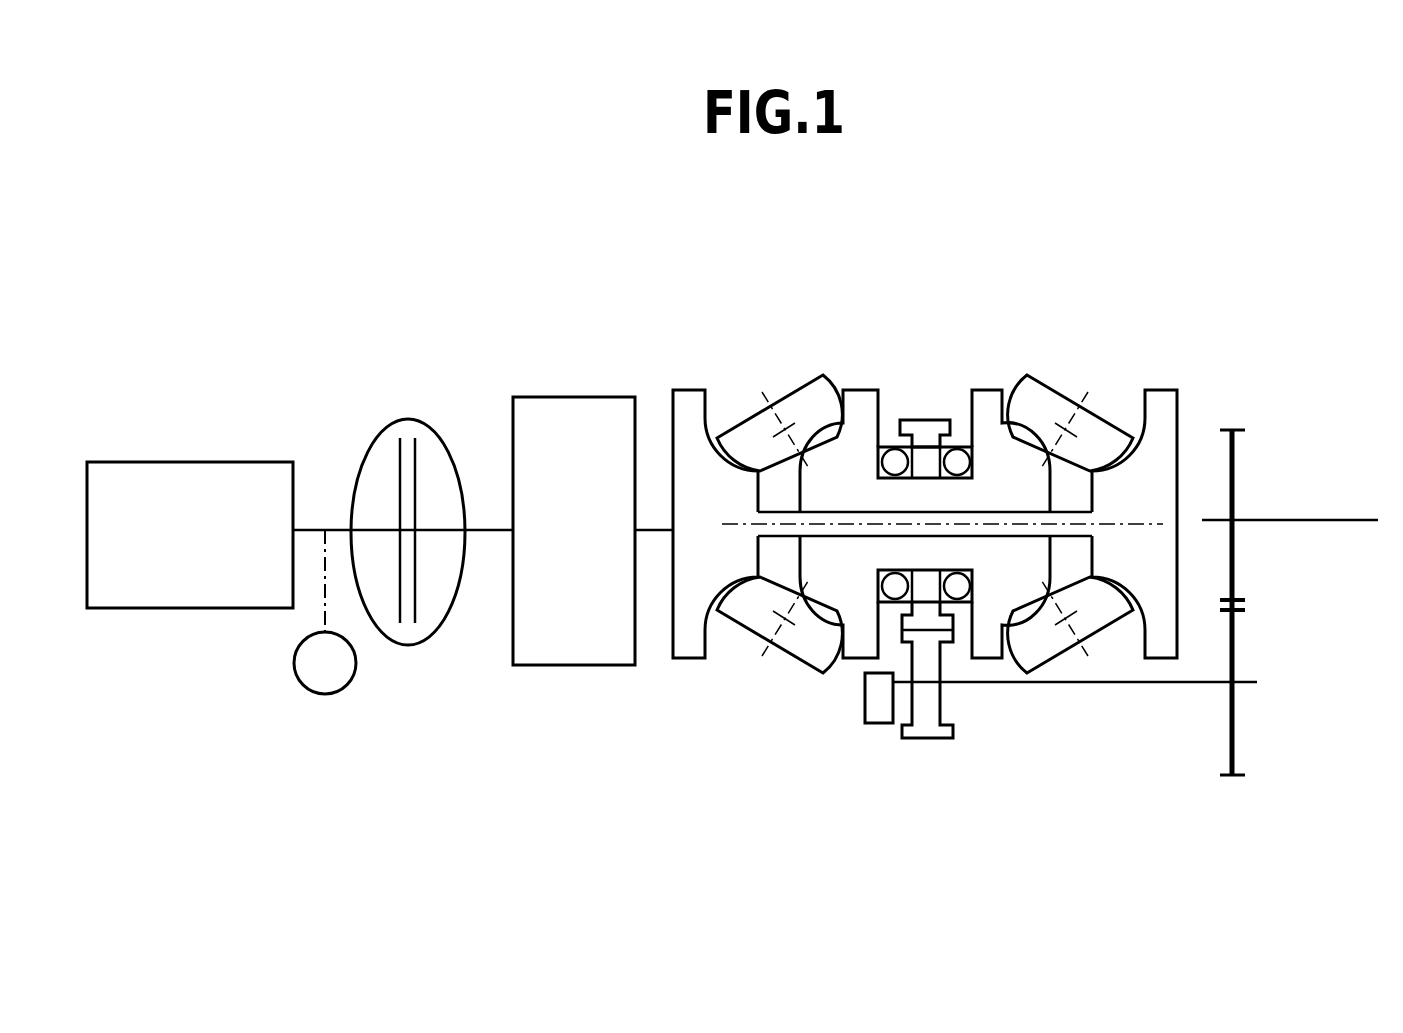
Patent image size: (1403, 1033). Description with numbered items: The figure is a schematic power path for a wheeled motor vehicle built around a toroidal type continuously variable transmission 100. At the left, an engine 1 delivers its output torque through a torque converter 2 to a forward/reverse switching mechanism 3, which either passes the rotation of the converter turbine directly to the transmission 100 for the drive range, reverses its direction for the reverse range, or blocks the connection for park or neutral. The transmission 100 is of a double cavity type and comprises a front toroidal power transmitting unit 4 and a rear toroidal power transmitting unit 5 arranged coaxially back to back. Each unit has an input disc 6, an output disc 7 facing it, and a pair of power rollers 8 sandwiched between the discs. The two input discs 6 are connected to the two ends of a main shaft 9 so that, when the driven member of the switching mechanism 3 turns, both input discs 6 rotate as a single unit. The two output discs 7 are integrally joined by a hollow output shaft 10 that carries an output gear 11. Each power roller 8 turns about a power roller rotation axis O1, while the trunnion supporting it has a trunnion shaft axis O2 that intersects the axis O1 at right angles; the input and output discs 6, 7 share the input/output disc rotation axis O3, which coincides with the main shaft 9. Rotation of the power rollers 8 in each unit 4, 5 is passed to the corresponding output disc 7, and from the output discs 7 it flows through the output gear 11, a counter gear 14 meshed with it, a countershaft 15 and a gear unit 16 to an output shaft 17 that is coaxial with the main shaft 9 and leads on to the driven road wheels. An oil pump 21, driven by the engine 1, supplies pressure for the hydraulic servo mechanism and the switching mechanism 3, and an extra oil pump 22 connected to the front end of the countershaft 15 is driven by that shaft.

The engine 1 is at (195, 462).
The torque converter 2 is at (410, 420).
The forward/reverse switching mechanism 3 is at (590, 666).
The front toroidal power transmitting unit 4 is at (773, 362).
The rear toroidal power transmitting unit 5 is at (1069, 355).
The input disc 6 is at (692, 402).
The output disc 7 is at (860, 402).
The power roller 8 is at (740, 440).
The main shaft 9 is at (778, 548).
The hollow output shaft 10 is at (955, 493).
The output gear 11 is at (912, 420).
The counter gear 14 is at (935, 740).
The countershaft 15 is at (1177, 683).
The gear unit 16 is at (1232, 562).
The output shaft 17 is at (1372, 521).
The oil pump 21 is at (303, 690).
The extra oil pump 22 is at (880, 723).
The toroidal type continuously variable transmission 100 is at (923, 262).
The power roller rotation axis O1 is at (765, 400).
The trunnion shaft axis O2 is at (782, 430).
The input/output disc rotation axis O3 is at (1163, 524).